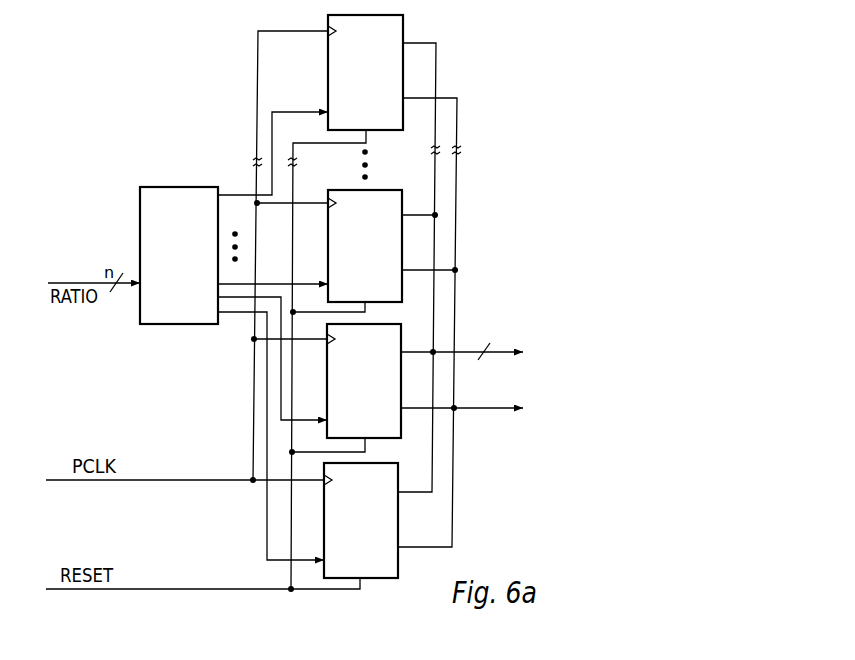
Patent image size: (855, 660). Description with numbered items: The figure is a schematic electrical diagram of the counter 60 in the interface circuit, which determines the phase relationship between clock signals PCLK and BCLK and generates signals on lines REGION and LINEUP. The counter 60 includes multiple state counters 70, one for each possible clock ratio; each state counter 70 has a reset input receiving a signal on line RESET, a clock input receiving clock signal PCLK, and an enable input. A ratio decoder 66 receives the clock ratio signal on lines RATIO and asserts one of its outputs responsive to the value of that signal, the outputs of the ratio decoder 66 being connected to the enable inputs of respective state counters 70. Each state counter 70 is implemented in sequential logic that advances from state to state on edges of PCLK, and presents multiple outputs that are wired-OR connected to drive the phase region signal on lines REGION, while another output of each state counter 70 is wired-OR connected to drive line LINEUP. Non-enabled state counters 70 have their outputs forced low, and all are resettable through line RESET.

The counter 60 is at (462, 296).
The ratio decoder 66 is at (200, 192).
The state counter 70 is at (368, 70).